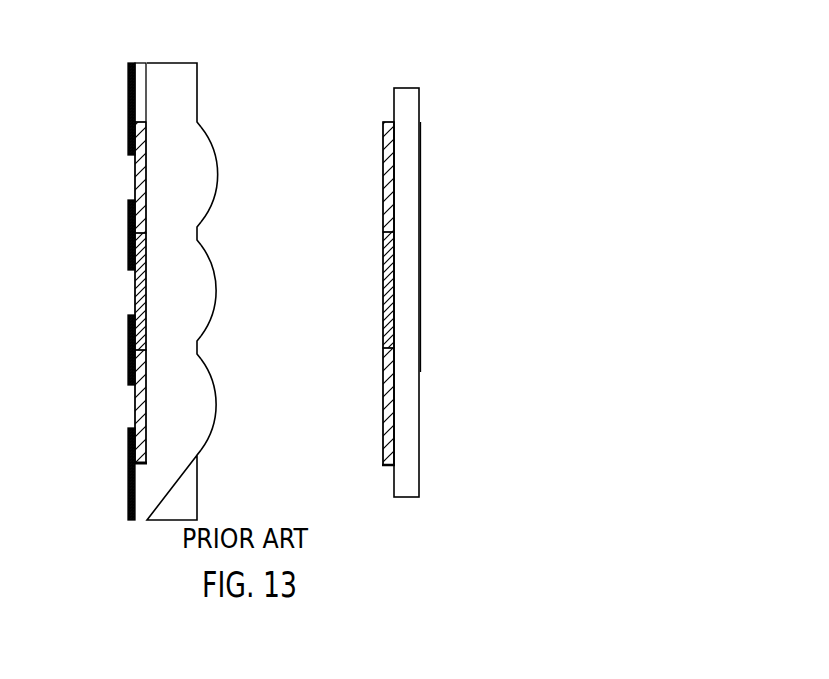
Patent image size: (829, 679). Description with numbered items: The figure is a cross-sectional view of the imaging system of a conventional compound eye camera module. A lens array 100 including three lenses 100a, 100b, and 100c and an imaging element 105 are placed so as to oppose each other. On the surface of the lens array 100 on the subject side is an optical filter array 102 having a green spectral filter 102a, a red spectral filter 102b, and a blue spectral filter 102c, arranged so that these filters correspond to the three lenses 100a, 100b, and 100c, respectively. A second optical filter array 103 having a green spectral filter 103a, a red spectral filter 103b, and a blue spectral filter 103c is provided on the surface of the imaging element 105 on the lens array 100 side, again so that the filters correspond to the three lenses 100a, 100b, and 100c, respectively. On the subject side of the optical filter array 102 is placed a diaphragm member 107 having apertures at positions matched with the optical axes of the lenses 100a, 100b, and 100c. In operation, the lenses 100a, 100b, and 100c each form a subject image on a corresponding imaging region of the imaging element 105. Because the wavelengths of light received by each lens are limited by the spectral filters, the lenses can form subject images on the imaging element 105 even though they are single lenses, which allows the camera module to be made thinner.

The lens array 100 is at (219, 261).
The lens 100a is at (212, 158).
The lens 100b is at (212, 271).
The lens 100c is at (212, 385).
The optical filter array 102 is at (104, 232).
The green spectral filter 102a is at (137, 174).
The red spectral filter 102b is at (137, 293).
The blue spectral filter 102c is at (137, 404).
The optical filter array 103 is at (348, 259).
The green spectral filter 103a is at (383, 198).
The red spectral filter 103b is at (383, 313).
The blue spectral filter 103c is at (383, 428).
The imaging element 105 is at (408, 88).
The diaphragm member 107 is at (130, 63).